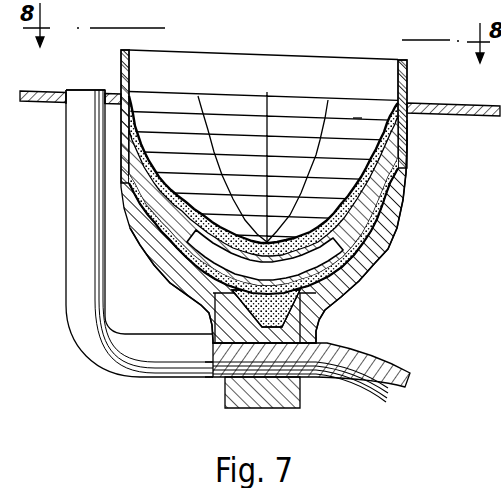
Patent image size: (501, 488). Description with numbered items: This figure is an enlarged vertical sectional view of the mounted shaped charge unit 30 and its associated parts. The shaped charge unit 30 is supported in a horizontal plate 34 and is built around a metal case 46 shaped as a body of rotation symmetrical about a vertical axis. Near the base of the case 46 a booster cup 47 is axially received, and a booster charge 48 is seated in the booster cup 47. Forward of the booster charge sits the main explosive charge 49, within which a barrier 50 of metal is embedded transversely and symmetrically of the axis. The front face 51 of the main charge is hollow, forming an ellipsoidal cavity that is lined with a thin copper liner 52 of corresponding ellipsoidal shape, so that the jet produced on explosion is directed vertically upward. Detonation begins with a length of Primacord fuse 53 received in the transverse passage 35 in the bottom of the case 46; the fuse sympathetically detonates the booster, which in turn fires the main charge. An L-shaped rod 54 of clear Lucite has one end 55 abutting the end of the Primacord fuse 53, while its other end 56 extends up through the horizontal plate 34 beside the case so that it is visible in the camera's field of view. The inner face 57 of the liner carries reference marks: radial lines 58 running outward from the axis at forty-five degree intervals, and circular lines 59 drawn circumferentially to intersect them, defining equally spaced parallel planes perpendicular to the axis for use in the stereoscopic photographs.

The shaped charge unit 30 is at (401, 200).
The horizontal plate 34 is at (472, 84).
The transverse passage 35 is at (280, 404).
The metal case 46 is at (401, 175).
The booster cup 47 is at (325, 316).
The booster charge 48 is at (355, 289).
The main explosive charge 49 is at (383, 223).
The barrier 50 is at (370, 257).
The front face 51 is at (403, 153).
The copper liner 52 is at (404, 133).
The Primacord fuse 53 is at (373, 366).
The L-shaped rod 54 is at (66, 278).
The end of rod 55 is at (214, 372).
The other end of rod 56 is at (94, 72).
The inner face of liner 57 is at (215, 102).
The radial lines 58 is at (323, 103).
The circular lines 59 is at (353, 118).